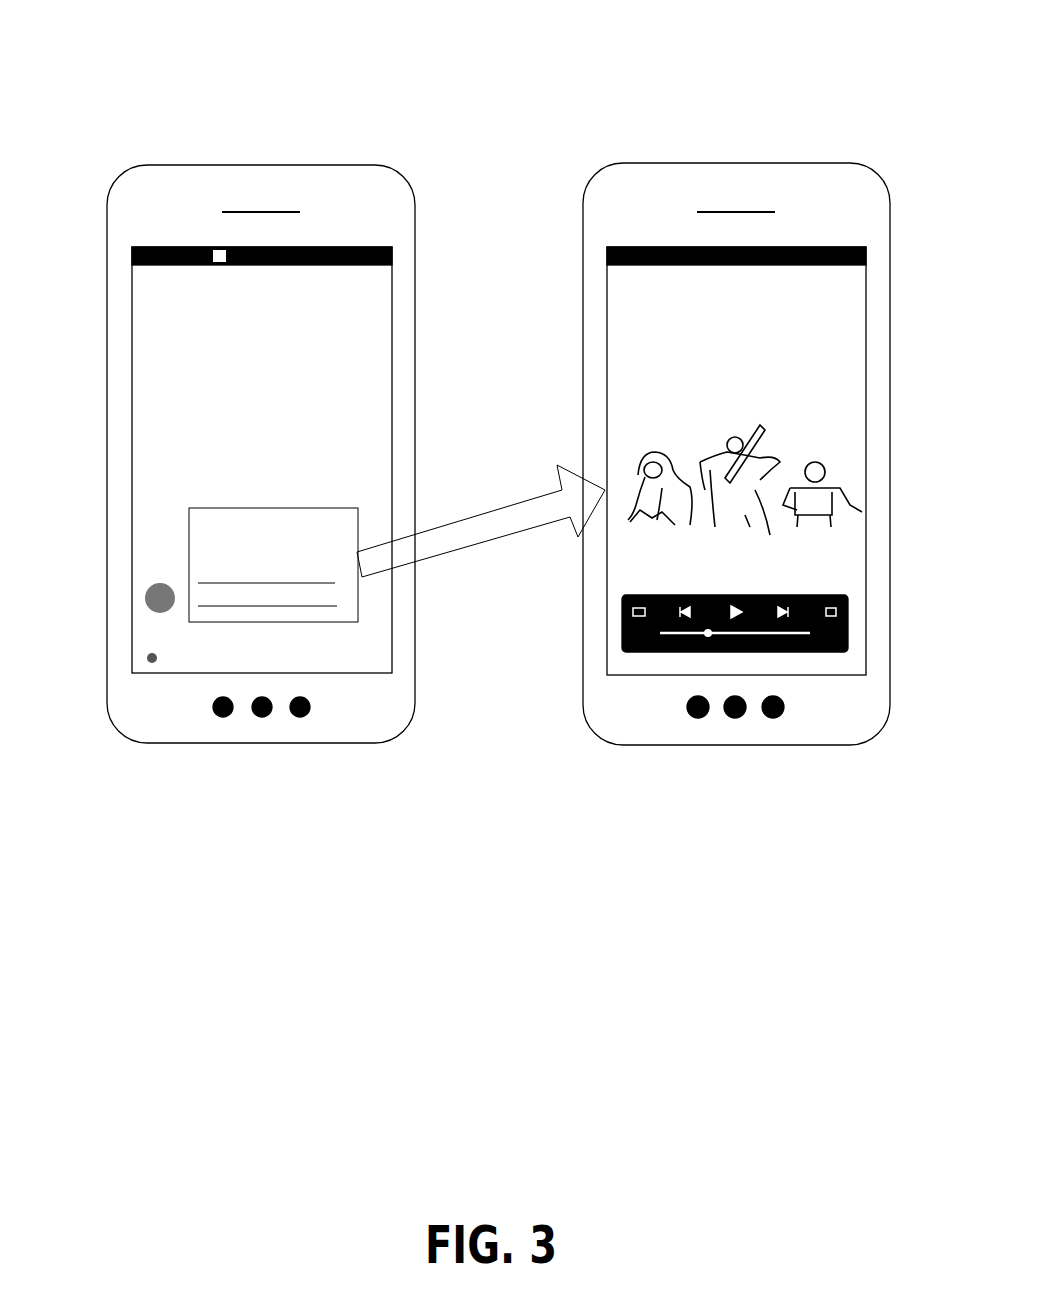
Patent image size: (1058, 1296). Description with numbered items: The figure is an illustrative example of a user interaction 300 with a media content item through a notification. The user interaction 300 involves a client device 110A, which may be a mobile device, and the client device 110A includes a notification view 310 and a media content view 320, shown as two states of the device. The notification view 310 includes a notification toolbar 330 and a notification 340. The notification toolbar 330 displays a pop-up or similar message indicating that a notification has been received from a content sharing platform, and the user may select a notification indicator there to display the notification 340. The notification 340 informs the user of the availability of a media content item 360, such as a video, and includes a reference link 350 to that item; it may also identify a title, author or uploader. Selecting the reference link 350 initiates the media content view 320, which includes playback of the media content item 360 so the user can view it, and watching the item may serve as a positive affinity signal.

The user interaction 300 is at (156, 101).
The client device 110A is at (498, 472).
The notification view 310 is at (298, 155).
The media content view 320 is at (718, 156).
The notification toolbar 330 is at (237, 246).
The notification 340 is at (275, 622).
The reference link 350 is at (335, 595).
The media content item 360 is at (765, 527).